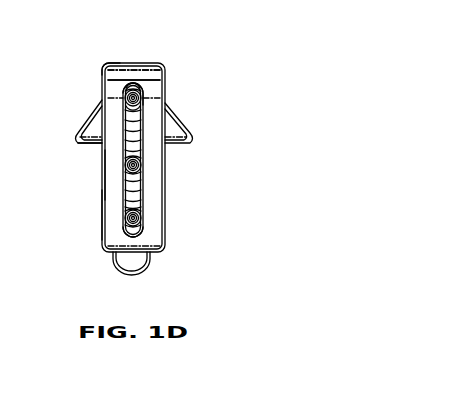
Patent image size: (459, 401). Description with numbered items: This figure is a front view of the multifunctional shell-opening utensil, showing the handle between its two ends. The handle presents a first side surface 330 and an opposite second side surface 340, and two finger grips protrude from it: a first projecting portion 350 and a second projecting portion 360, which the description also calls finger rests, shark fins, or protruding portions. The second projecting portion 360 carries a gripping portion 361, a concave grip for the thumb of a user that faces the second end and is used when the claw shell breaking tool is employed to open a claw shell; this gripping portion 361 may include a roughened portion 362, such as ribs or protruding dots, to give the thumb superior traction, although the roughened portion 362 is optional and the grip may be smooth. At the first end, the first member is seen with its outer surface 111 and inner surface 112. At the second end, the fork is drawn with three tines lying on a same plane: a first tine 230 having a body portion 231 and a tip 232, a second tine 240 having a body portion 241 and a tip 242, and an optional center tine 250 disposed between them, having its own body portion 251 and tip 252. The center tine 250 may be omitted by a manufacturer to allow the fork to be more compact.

The outer surface 111 is at (77, 128).
The inner surface 112 is at (85, 148).
The first tine 230 is at (121, 99).
The body portion 231 is at (148, 88).
The tip 232 is at (152, 108).
The second tine 240 is at (115, 233).
The body portion 241 is at (147, 238).
The tip 242 is at (145, 218).
The center tine 250 is at (115, 175).
The body portion 251 is at (196, 143).
The tip 252 is at (145, 163).
The first side surface 330 is at (165, 200).
The second side surface 340 is at (103, 212).
The first projecting portion 350 is at (107, 257).
The second projecting portion 360 is at (105, 62).
The gripping portion 361 is at (128, 75).
The roughened portion 362 is at (148, 77).